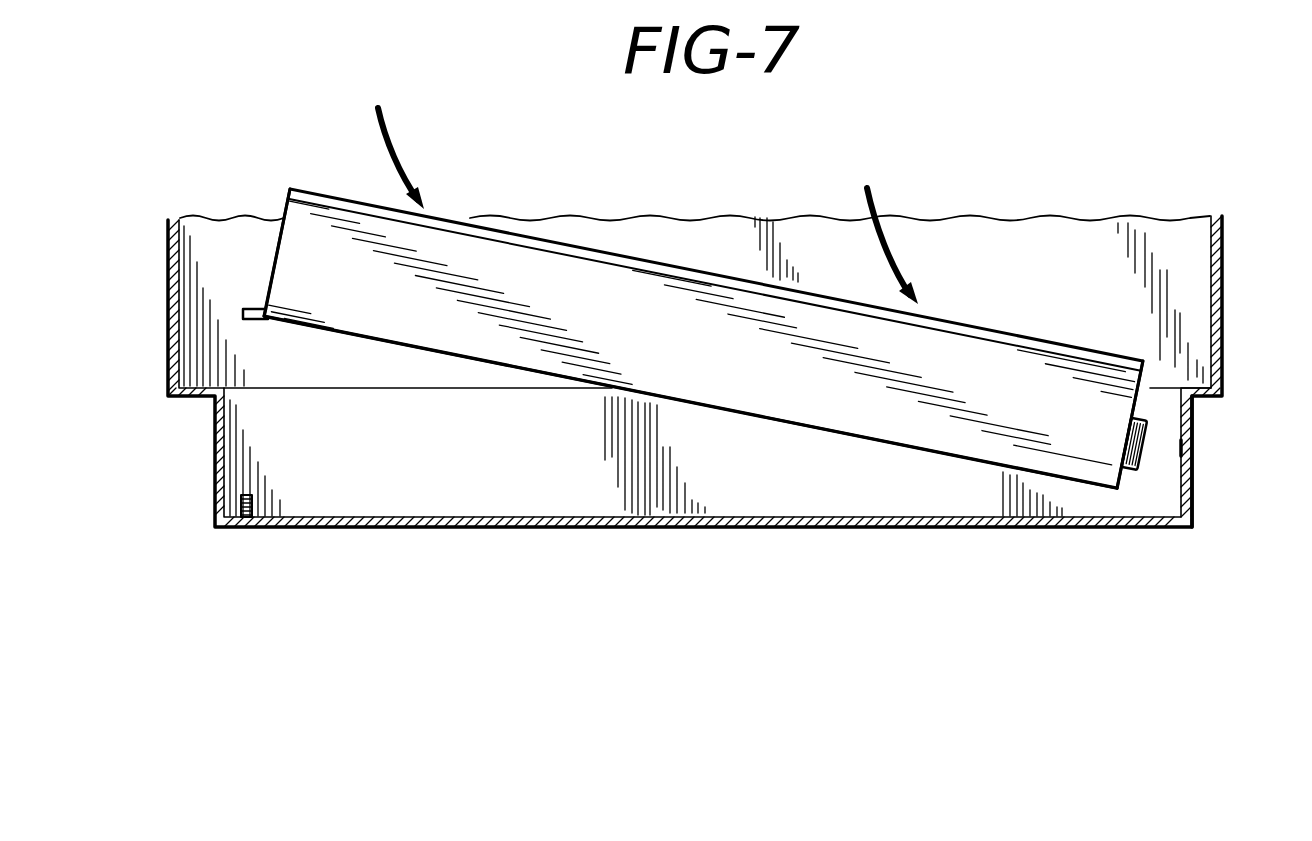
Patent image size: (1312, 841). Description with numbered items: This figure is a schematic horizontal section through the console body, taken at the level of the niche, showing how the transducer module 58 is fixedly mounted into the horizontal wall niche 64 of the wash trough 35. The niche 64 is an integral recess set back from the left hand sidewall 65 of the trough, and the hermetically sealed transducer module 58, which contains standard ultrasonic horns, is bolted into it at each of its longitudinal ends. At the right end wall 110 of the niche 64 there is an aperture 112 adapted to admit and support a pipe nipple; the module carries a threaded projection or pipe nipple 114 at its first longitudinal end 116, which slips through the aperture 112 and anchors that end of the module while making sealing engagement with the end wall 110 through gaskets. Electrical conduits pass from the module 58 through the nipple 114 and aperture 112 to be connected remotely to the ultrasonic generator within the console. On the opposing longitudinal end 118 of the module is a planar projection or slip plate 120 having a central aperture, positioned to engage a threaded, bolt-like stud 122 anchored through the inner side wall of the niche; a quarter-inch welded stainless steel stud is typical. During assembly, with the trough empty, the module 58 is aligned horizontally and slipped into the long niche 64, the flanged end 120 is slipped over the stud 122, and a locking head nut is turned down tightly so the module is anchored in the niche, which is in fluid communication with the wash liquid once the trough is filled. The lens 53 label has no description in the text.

The wash trough 35 is at (1075, 248).
The cover plate 53 is at (647, 260).
The transducer module 58 is at (756, 414).
The wall niche 64 is at (208, 471).
The left hand sidewall 65 is at (205, 385).
The right end wall 110 is at (1192, 505).
The aperture 112 is at (1190, 450).
The threaded projection (pipe nipple) 114 is at (1131, 468).
The first longitudinal end 116 is at (1148, 378).
The opposing longitudinal end 118 is at (285, 212).
The planar projection (slip plate) 120 is at (250, 307).
The threaded bolt-like projection (stud) 122 is at (250, 507).